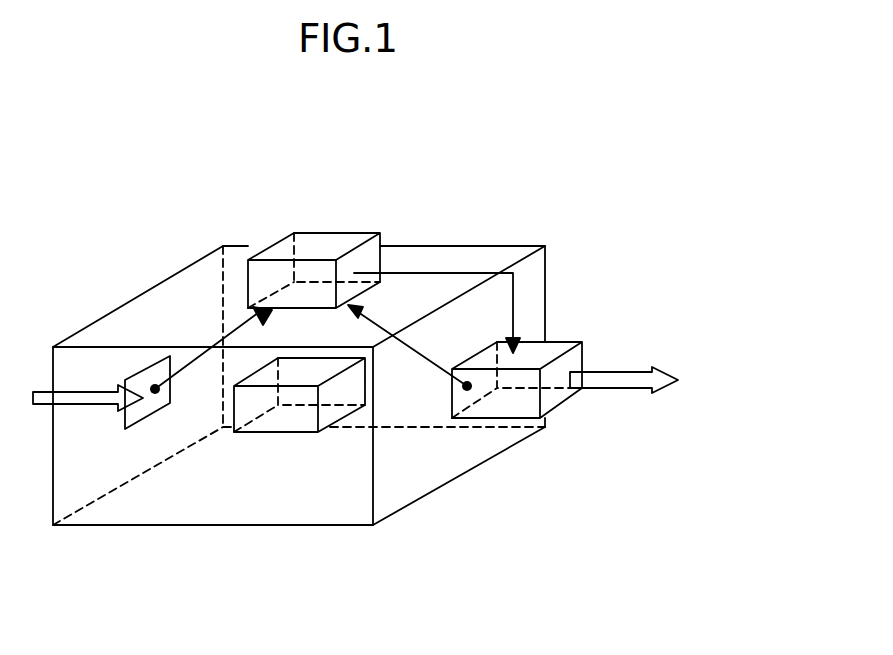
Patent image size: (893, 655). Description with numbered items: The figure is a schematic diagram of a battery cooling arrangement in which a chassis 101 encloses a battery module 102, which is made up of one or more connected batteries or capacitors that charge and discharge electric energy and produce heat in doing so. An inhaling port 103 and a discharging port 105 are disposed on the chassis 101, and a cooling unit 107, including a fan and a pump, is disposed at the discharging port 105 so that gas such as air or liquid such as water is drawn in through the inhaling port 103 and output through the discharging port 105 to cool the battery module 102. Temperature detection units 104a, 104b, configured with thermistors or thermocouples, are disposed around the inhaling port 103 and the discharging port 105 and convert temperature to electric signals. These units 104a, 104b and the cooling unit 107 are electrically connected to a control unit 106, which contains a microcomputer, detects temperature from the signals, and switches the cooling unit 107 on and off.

The chassis 101 is at (80, 525).
The battery module 102 is at (282, 433).
The inhaling port 103 is at (140, 373).
The temperature detection unit 104a is at (155, 392).
The temperature detection unit 104b is at (467, 390).
The discharging port 105 is at (487, 388).
The control unit 106 is at (312, 246).
The cooling unit 107 is at (558, 342).